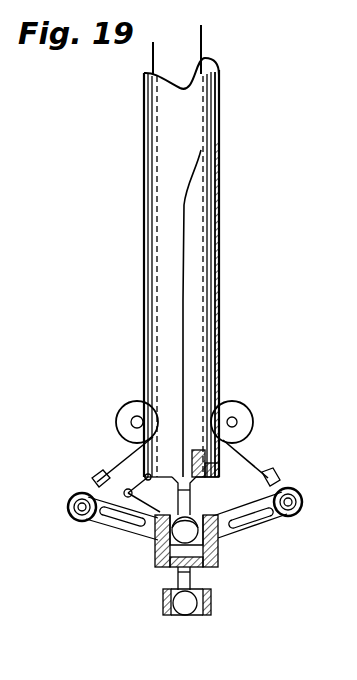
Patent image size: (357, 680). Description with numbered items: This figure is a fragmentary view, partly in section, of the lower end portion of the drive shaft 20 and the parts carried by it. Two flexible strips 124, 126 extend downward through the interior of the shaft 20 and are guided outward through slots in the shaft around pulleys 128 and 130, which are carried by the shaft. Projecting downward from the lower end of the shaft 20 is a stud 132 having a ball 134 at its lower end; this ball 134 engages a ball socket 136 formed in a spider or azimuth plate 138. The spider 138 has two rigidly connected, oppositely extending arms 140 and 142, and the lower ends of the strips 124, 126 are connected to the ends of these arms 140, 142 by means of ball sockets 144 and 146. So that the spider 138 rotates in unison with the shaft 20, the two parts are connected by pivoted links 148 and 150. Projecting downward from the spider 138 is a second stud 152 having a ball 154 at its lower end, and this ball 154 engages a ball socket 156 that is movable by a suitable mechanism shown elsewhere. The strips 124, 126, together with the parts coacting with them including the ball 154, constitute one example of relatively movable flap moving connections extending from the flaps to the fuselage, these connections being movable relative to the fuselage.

The shaft 20 is at (221, 233).
The strip 124 is at (152, 322).
The strip 126 is at (205, 297).
The pulley 128 is at (127, 405).
The pulley 130 is at (240, 408).
The stud 132 is at (192, 495).
The ball 134 is at (205, 565).
The ball socket 136 is at (175, 520).
The spider or azimuth plate 138 is at (158, 560).
The arm 140 is at (118, 533).
The arm 142 is at (262, 530).
The ball socket 144 is at (70, 497).
The ball socket 146 is at (298, 493).
The pivoted link 148 is at (136, 487).
The pivoted link 150 is at (100, 522).
The stud 152 is at (177, 580).
The ball 154 is at (190, 615).
The ball socket 156 is at (211, 598).